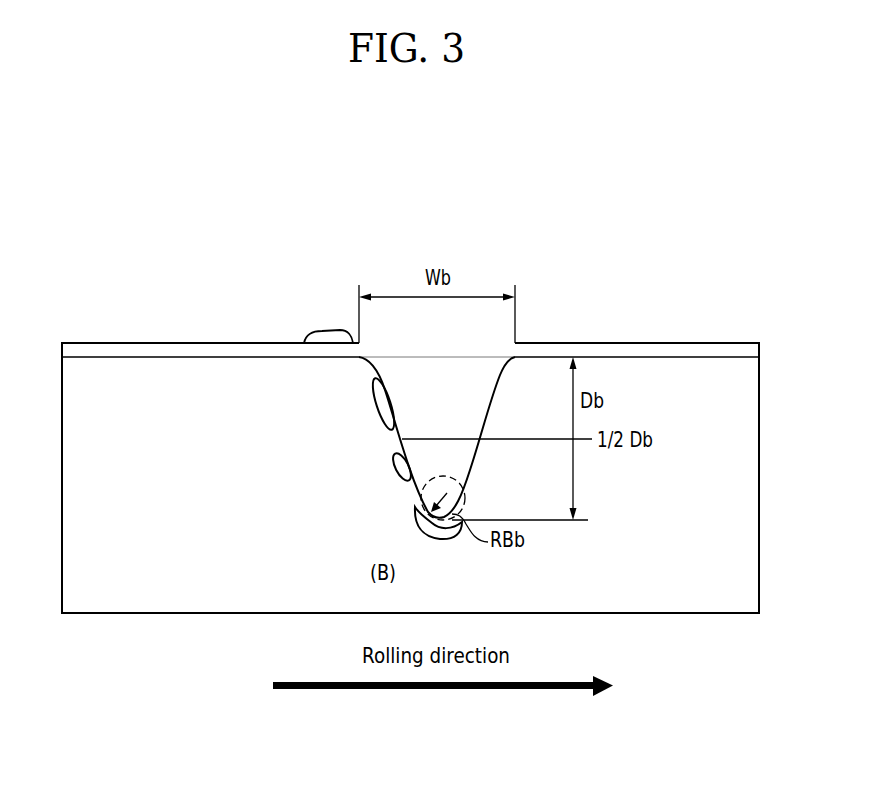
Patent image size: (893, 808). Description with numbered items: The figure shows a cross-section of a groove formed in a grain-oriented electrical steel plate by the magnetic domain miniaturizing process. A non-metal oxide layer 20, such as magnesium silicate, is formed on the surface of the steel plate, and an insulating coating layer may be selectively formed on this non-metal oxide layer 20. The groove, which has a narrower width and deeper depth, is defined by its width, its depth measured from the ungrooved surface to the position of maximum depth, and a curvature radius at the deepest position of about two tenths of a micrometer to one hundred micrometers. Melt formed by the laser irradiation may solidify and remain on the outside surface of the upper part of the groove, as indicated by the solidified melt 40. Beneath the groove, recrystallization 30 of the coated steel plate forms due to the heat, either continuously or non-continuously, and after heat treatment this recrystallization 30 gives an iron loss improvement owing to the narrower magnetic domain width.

The non-metal oxide layer 20 is at (176, 328).
The recrystallization 30 is at (395, 468).
The solidified melt 40 is at (334, 335).